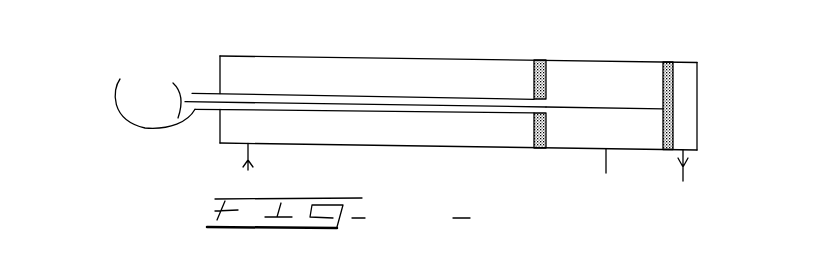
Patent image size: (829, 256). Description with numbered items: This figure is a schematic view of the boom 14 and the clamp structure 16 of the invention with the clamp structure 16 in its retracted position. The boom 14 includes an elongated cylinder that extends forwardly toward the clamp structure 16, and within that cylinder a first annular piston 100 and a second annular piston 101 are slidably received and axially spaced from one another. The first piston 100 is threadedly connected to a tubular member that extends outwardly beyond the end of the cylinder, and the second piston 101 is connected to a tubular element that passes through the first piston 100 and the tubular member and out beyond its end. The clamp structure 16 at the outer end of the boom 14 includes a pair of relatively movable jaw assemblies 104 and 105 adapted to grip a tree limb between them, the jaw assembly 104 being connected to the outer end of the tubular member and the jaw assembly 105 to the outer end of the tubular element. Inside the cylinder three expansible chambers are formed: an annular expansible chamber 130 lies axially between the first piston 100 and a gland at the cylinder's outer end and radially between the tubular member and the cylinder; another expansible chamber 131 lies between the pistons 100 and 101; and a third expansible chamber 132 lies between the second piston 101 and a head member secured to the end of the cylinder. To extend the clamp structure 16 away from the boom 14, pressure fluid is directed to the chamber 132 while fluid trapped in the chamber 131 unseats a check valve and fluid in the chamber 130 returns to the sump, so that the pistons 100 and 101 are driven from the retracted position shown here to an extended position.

The boom 14 is at (397, 51).
The clamp structure 16 is at (123, 143).
The first annular piston 100 is at (540, 60).
The second annular piston 101 is at (666, 62).
The jaw assembly 104 is at (120, 80).
The jaw assembly 105 is at (182, 93).
The annular expansible chamber 130 is at (330, 57).
The expansible chamber 131 is at (600, 75).
The third expansible chamber 132 is at (685, 75).